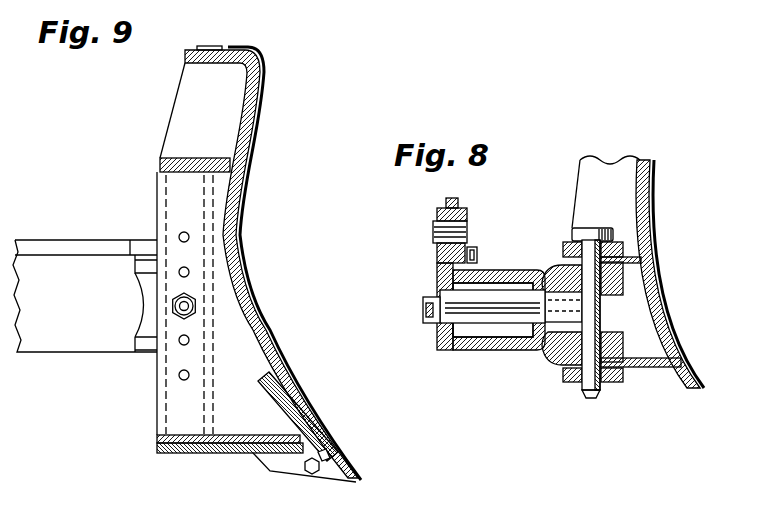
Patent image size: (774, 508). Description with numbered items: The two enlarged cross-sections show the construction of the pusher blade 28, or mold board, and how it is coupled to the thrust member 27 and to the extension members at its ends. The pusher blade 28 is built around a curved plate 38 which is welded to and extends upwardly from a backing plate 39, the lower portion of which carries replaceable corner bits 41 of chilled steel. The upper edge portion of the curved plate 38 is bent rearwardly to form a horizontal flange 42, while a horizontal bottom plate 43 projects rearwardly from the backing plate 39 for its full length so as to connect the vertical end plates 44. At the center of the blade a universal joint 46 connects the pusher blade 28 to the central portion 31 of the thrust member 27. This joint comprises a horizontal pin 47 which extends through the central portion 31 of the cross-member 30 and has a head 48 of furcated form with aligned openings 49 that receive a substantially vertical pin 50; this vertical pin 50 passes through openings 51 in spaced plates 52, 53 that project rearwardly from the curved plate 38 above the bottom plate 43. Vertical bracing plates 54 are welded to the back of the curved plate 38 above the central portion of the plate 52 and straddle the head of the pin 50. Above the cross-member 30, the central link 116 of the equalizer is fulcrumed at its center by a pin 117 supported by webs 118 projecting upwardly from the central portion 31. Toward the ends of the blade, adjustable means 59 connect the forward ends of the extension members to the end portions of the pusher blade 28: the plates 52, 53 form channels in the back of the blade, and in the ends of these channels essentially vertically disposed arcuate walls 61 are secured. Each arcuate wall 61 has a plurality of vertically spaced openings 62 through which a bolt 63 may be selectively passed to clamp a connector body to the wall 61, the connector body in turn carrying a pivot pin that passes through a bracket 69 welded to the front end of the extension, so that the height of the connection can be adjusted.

In FIG. 8, the thrust member 27 is at (481, 296).
In FIG. 9, the pusher blade 28 is at (273, 263).
In FIG. 8, the pusher blade 28 is at (691, 274).
In FIG. 8, the cross-member 30 is at (492, 272).
In FIG. 8, the central portion 31 is at (490, 350).
In FIG. 9, the curved plate 38 is at (248, 298).
In FIG. 8, the curved plate 38 is at (667, 318).
In FIG. 9, the backing plate 39 is at (288, 414).
In FIG. 9, the corner bits 41 is at (352, 471).
In FIG. 9, the horizontal flange 42 is at (220, 50).
In FIG. 9, the horizontal bottom plate 43 is at (215, 453).
In FIG. 9, the vertical end plates 44 is at (258, 93).
In FIG. 8, the universal joint 46 is at (518, 229).
In FIG. 8, the horizontal pin 47 is at (478, 310).
In FIG. 8, the head 48 is at (558, 343).
In FIG. 8, the aligned openings 49 is at (601, 308).
In FIG. 8, the vertical pin 50 is at (592, 352).
In FIG. 8, the openings 51 is at (563, 248).
In FIG. 9, the plate 52 is at (160, 165).
In FIG. 8, the plate 52 is at (620, 262).
In FIG. 9, the plate 53 is at (157, 437).
In FIG. 8, the plate 53 is at (650, 370).
In FIG. 9, the vertical bracing plates 54 is at (197, 88).
In FIG. 8, the vertical bracing plates 54 is at (603, 178).
In FIG. 9, the adjustable means 59 is at (85, 274).
In FIG. 9, the arcuate walls 61 is at (180, 196).
In FIG. 9, the openings 62 is at (178, 375).
In FIG. 9, the bolt 63 is at (174, 302).
In FIG. 9, the bracket 69 is at (150, 327).
In FIG. 8, the central link 116 is at (447, 203).
In FIG. 8, the pin 117 is at (440, 233).
In FIG. 8, the webs 118 is at (458, 215).